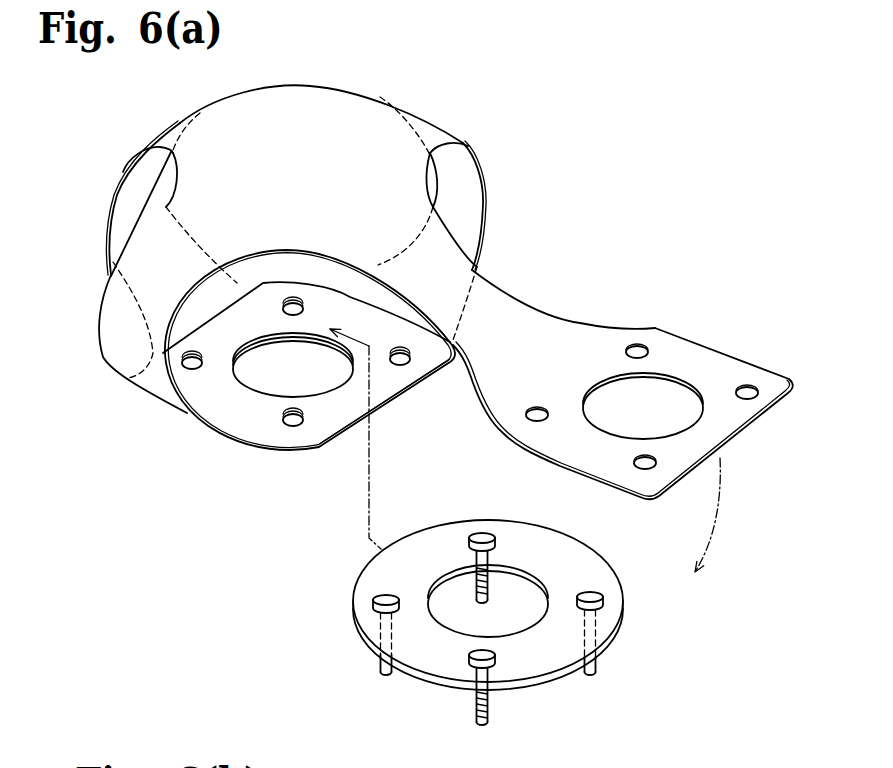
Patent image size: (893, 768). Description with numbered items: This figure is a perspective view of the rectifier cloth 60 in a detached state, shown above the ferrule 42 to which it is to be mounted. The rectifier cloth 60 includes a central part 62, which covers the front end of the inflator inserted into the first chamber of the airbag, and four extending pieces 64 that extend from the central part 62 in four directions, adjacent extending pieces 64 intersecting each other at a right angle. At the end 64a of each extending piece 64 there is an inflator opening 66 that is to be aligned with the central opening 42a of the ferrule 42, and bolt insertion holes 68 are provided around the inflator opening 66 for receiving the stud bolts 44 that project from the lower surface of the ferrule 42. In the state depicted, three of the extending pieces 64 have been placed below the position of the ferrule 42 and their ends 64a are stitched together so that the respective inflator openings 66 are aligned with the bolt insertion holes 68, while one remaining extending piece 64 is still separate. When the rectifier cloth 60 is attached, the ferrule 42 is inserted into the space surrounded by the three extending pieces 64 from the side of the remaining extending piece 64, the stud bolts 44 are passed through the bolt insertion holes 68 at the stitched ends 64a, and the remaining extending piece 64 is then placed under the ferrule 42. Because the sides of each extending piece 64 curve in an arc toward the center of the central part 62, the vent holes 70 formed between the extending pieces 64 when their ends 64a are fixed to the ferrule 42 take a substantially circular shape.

The rectifier cloth 60 is at (403, 265).
The central part 62 is at (288, 124).
The extending piece 64 is at (125, 190).
The end of the extending piece 64a is at (257, 413).
The inflator opening 66 is at (273, 333).
The bolt insertion hole 68 is at (297, 300).
The vent hole 70 is at (364, 134).
The ferrule 42 is at (537, 631).
The central opening 42a is at (457, 616).
The stud bolt 44 is at (476, 592).